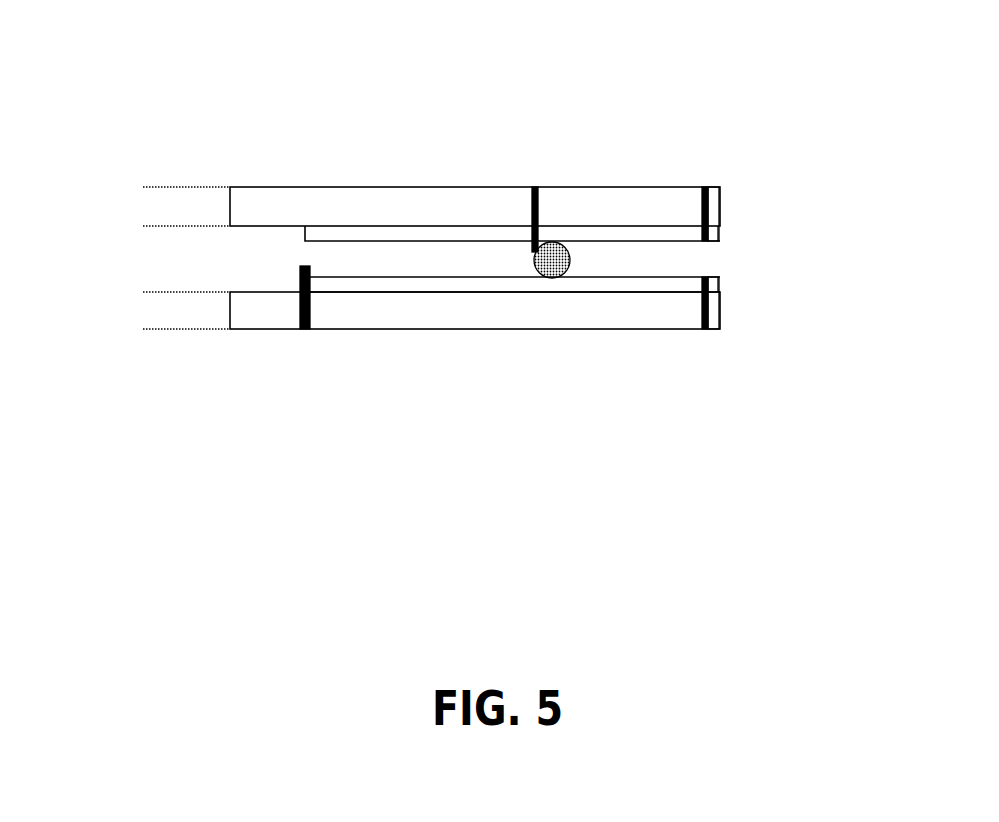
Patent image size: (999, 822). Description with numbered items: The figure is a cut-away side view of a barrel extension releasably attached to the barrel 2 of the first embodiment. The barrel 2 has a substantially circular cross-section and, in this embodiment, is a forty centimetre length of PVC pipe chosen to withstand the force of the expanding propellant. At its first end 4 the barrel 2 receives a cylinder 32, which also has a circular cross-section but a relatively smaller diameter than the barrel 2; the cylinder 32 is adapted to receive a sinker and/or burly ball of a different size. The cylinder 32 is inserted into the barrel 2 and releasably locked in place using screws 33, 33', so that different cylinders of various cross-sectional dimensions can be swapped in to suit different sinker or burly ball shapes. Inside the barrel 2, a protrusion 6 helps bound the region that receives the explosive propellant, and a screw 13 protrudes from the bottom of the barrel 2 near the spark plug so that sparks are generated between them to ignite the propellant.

The barrel 2 is at (420, 187).
The first end 4 is at (848, 209).
The protrusion 6 is at (533, 187).
The screw 13 is at (300, 298).
The cylinder 32 is at (378, 241).
The screw 33 is at (788, 151).
The screw 33' is at (787, 362).